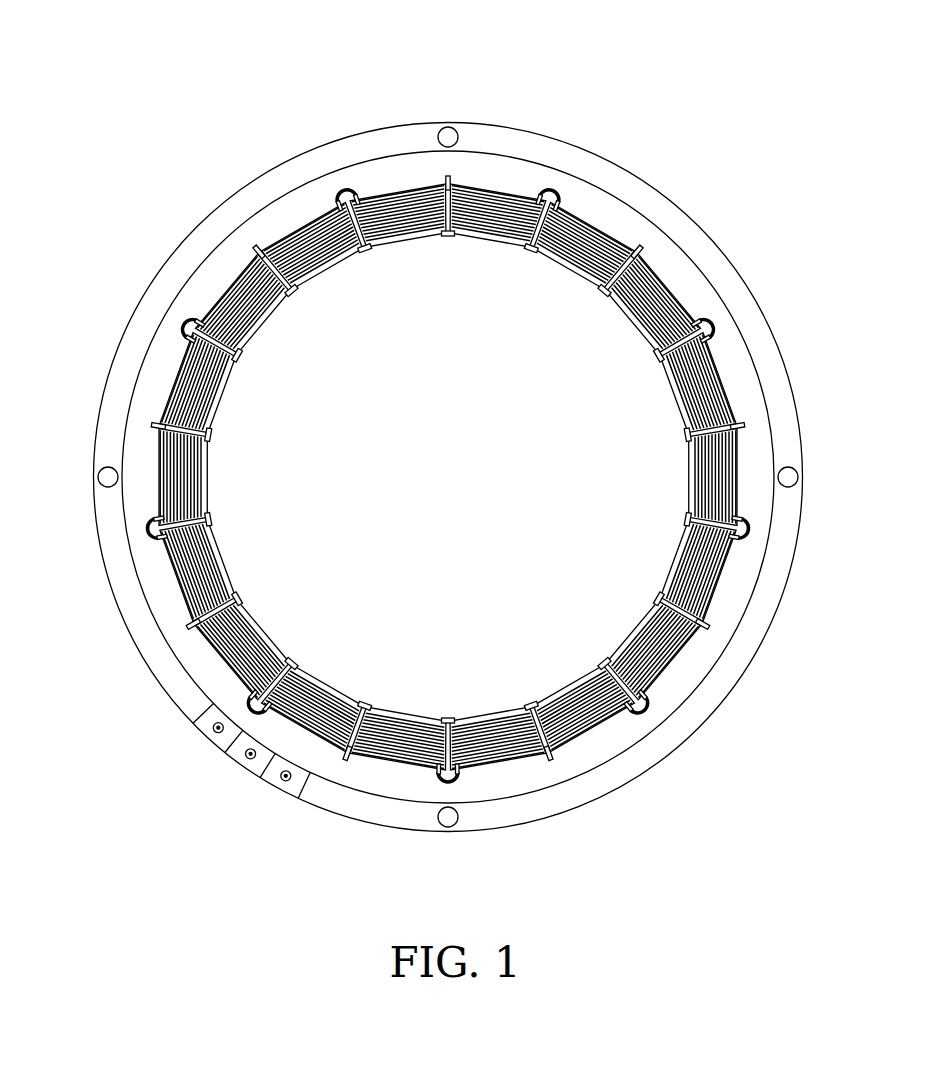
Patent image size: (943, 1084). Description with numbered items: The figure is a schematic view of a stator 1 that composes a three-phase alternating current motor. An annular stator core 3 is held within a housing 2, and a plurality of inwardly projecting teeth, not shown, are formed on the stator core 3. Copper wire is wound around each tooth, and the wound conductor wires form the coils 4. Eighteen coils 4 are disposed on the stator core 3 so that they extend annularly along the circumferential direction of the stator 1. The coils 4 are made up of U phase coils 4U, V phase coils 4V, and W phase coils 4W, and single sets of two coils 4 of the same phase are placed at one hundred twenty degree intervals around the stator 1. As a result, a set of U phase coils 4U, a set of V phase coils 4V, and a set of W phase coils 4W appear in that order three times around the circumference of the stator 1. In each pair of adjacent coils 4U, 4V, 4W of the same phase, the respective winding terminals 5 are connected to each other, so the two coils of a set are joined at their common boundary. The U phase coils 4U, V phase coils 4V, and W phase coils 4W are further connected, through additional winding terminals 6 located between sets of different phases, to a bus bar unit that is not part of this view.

The stator 1 is at (546, 80).
The housing 2 is at (603, 173).
The stator core 3 is at (640, 237).
The coils 4 is at (455, 477).
The U phase coils 4U is at (393, 213).
The V phase coils 4V is at (495, 213).
The W phase coils 4W is at (687, 387).
The winding terminals 5 is at (360, 197).
The winding terminals 6 is at (432, 184).